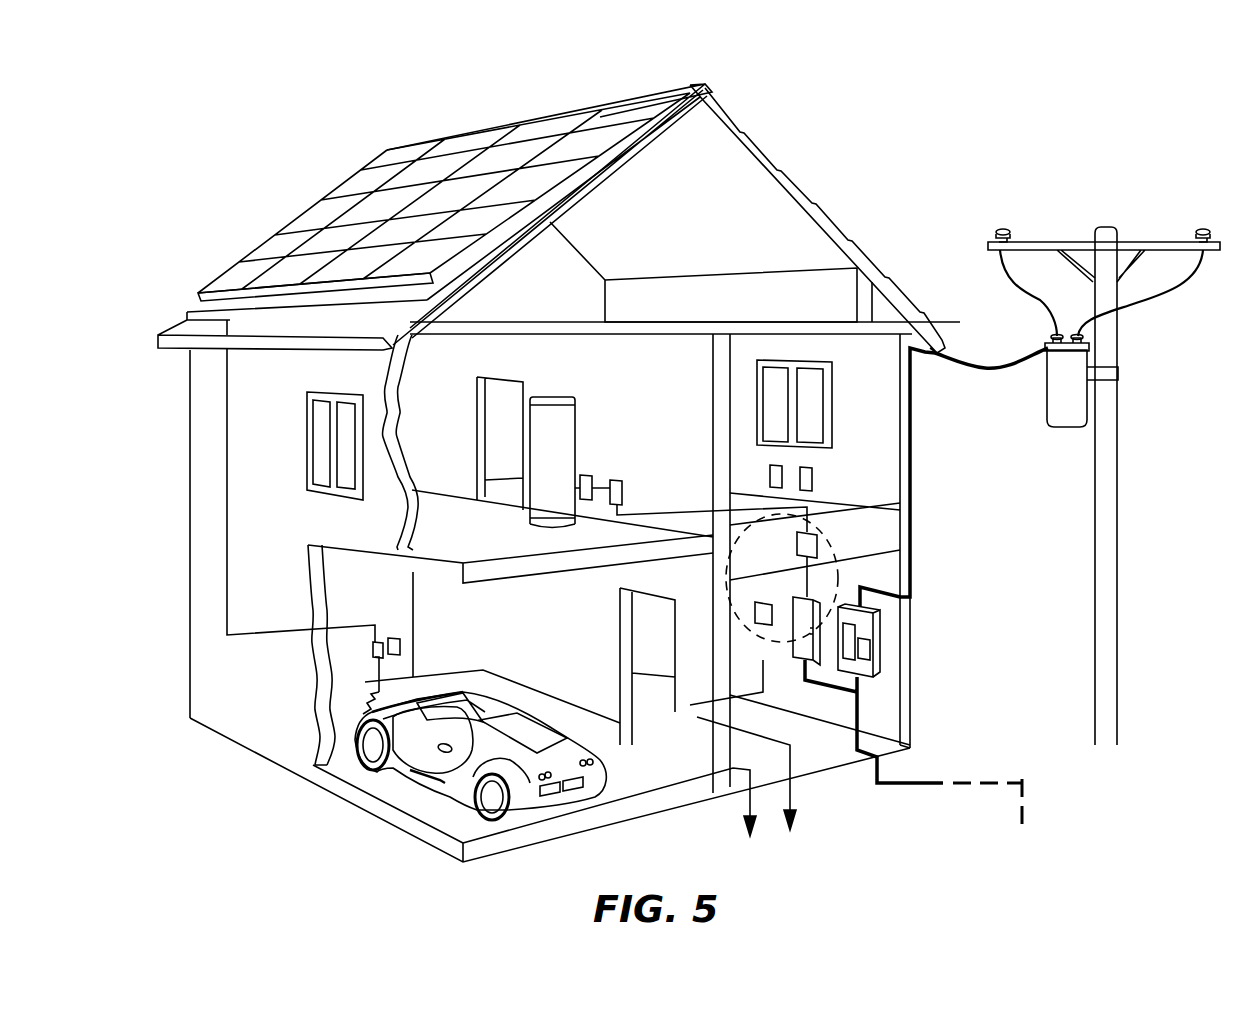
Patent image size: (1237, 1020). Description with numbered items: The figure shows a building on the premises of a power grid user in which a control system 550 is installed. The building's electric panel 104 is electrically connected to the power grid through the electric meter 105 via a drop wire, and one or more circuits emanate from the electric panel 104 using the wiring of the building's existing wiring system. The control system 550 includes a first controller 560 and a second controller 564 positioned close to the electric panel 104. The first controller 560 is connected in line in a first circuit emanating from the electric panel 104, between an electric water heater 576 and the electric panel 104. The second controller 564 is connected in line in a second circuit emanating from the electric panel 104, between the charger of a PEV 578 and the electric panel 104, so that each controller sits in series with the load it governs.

The electric water heater 576 is at (561, 397).
The control system 550 is at (835, 524).
The first controller 560 is at (817, 545).
The second controller 564 is at (760, 625).
The electric panel 104 is at (806, 658).
The electric meter 105 is at (878, 640).
The PEV 578 is at (455, 780).